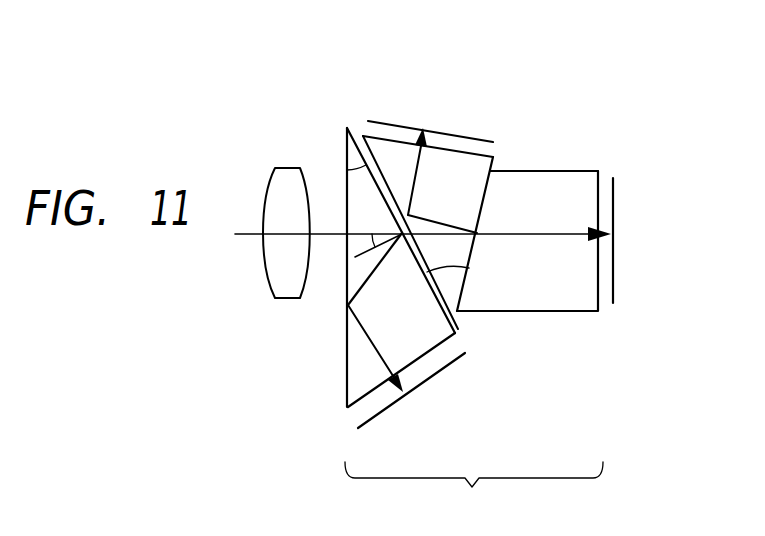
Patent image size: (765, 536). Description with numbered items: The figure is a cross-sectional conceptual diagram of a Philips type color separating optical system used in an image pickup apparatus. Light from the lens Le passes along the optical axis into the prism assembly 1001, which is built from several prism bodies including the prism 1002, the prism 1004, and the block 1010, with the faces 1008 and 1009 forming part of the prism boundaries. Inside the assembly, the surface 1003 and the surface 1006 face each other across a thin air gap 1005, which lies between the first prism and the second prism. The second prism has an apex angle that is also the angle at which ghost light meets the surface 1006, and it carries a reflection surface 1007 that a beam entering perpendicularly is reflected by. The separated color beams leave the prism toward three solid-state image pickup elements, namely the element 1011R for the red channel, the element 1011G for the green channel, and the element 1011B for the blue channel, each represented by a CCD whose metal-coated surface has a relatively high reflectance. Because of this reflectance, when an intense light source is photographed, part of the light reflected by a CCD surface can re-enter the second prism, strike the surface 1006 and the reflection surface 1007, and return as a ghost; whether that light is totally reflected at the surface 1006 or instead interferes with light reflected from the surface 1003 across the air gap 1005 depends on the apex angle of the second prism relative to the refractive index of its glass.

The color separation prism assembly 1001 is at (471, 271).
The first prism 1002 is at (347, 336).
The surface 1003 is at (428, 287).
The third prism 1004 is at (363, 397).
The air gap 1005 is at (457, 313).
The surface 1006 is at (397, 150).
The reflection surface 1007 is at (476, 230).
The exit face toward R sensor 1008 is at (388, 137).
The entrance face of block 1009 is at (490, 197).
The glass block 1010 is at (600, 311).
The solid-state image pickup element 1011R is at (380, 121).
The G image sensor 1011G is at (615, 195).
The B image sensor 1011B is at (443, 368).
The lens Le is at (290, 167).